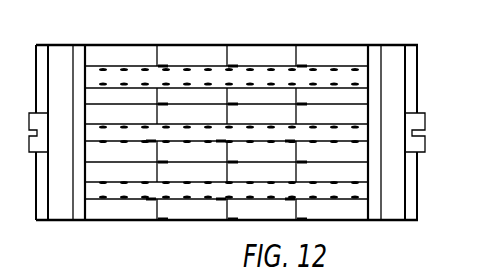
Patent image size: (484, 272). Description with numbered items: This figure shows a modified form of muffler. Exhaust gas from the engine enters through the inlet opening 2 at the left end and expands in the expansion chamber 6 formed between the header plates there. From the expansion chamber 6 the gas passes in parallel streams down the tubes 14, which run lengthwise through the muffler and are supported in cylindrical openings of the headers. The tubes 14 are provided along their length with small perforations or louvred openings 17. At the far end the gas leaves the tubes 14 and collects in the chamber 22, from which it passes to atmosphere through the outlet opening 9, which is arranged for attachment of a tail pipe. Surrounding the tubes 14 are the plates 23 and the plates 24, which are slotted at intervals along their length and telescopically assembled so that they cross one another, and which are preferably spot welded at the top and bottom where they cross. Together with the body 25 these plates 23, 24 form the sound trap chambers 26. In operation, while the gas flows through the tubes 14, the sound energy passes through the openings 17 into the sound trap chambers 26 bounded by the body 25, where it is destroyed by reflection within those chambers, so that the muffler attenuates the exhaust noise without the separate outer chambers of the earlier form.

The opening 2 is at (34, 141).
The expansion chamber 6 is at (65, 208).
The opening 9 is at (424, 145).
The tubes 14 is at (229, 111).
The perforations or louvred openings 17 is at (128, 82).
The chamber 22 is at (393, 54).
The plates 23 is at (322, 105).
The plates 24 is at (303, 54).
The body 25 is at (275, 45).
The sound trap chambers 26 is at (200, 55).